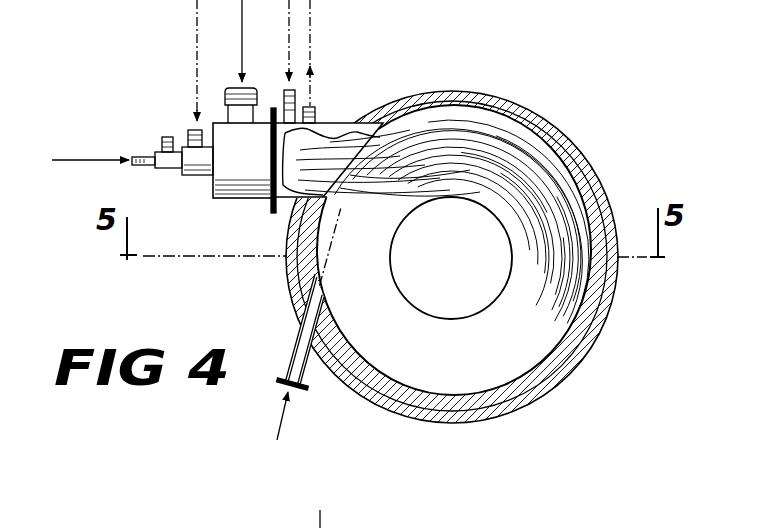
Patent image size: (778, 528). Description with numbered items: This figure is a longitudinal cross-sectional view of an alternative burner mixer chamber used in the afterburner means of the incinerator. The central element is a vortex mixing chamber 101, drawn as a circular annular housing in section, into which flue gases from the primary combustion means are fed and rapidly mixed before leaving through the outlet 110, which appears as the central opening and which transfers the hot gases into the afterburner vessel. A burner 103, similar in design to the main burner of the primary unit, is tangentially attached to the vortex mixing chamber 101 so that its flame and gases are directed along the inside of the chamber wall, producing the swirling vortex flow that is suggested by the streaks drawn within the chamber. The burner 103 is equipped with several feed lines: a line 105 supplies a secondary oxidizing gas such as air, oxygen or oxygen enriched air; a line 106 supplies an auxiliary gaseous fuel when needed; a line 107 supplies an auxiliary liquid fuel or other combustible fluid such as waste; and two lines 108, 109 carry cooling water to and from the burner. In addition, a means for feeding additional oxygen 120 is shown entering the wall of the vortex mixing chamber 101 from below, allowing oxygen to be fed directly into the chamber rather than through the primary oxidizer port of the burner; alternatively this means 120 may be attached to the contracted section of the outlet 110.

The vortex mixing chamber 101 is at (568, 212).
The burner 103 is at (240, 197).
The secondary oxidizing gas line 105 is at (227, 86).
The auxiliary gaseous fuel line 106 is at (193, 128).
The auxiliary liquid fuel line 107 is at (145, 167).
The cooling water line 108 is at (297, 95).
The cooling water line 109 is at (315, 115).
The outlet 110 is at (403, 287).
The means for feeding additional oxygen 120 is at (298, 354).